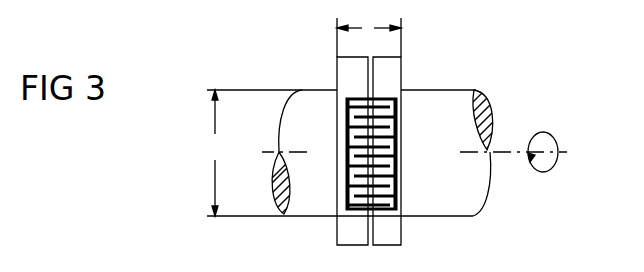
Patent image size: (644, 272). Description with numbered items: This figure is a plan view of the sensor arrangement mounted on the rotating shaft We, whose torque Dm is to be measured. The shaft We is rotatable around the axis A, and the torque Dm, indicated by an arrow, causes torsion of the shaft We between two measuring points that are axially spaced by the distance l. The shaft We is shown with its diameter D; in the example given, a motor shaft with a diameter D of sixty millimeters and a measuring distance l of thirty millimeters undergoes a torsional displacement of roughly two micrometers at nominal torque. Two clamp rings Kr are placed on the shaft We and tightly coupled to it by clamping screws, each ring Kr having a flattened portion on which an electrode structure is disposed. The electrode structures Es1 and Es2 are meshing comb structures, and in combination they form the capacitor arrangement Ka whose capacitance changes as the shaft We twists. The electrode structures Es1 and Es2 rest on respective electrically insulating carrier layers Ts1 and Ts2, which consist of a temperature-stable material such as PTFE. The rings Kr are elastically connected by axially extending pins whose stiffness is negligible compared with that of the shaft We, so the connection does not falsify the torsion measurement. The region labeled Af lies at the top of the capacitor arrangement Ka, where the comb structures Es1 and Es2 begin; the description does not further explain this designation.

The shaft We is at (476, 212).
The axis A is at (263, 152).
The diameter D is at (213, 153).
The distance l is at (369, 36).
The clamp rings Kr is at (352, 228).
The capacitor arrangement Ka is at (404, 130).
The mounting surface / frame Af is at (397, 97).
The carrier layer Ts1 is at (357, 180).
The carrier layer Ts2 is at (400, 183).
The electrode structure Es1 is at (346, 131).
The electrode structure Es2 is at (390, 146).
The torque Dm is at (558, 162).